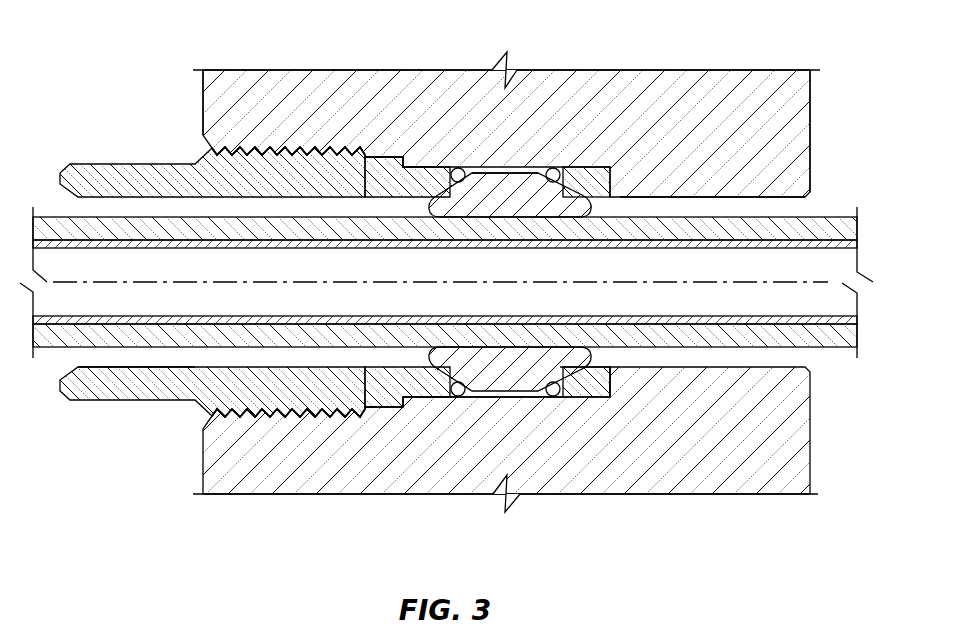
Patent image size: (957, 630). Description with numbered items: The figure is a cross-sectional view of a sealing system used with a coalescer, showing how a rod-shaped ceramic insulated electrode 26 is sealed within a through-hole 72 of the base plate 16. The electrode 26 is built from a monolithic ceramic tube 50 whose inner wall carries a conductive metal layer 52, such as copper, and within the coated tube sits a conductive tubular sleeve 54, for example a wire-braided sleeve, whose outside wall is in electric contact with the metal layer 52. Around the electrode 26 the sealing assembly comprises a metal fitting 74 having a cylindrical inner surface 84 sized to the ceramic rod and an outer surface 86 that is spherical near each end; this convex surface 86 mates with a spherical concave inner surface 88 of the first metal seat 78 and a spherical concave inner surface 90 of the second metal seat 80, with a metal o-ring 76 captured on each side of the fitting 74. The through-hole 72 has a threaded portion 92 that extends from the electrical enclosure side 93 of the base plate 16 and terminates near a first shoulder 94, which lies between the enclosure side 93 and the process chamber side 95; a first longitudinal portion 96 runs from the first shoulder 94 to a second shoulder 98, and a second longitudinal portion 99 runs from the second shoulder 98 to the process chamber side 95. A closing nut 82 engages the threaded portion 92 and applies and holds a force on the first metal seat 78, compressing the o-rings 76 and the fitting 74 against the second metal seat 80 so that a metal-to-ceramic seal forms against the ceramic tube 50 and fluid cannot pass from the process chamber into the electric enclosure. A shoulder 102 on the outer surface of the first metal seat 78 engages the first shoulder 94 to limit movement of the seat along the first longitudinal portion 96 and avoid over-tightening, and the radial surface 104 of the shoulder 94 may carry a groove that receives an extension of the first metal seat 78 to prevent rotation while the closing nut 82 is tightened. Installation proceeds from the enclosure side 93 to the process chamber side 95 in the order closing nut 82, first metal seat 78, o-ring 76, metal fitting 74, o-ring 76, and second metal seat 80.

The base plate 16 is at (708, 82).
The rod-shaped ceramic insulated electrode 26 is at (42, 374).
The monolithic ceramic tube 50 is at (843, 228).
The conductive metal layer 52 is at (471, 265).
The conductive tubular sleeve 54 is at (833, 245).
The through-hole 72 is at (826, 200).
The metal fitting 74 is at (502, 373).
The metal o-ring 76 is at (458, 168).
The first metal seat 78 is at (412, 388).
The second metal seat 80 is at (587, 385).
The closing nut 82 is at (113, 163).
The cylindrical inner surface 84 is at (522, 225).
The outer surface of the metal fitting 86 is at (507, 173).
The spherical concave inner surface of the first metal seat 88 is at (457, 380).
The spherical concave inner surface of the second metal seat 90 is at (583, 196).
The threaded portion 92 is at (248, 418).
The electrical enclosure side 93 is at (203, 120).
The first shoulder 94 is at (410, 158).
The process chamber side 95 is at (810, 120).
The first longitudinal portion 96 is at (527, 400).
The second shoulder 98 is at (612, 380).
The second longitudinal portion 99 is at (800, 380).
The shoulder of the first metal seat 102 is at (383, 400).
The radial surface of the first shoulder 104 is at (440, 378).